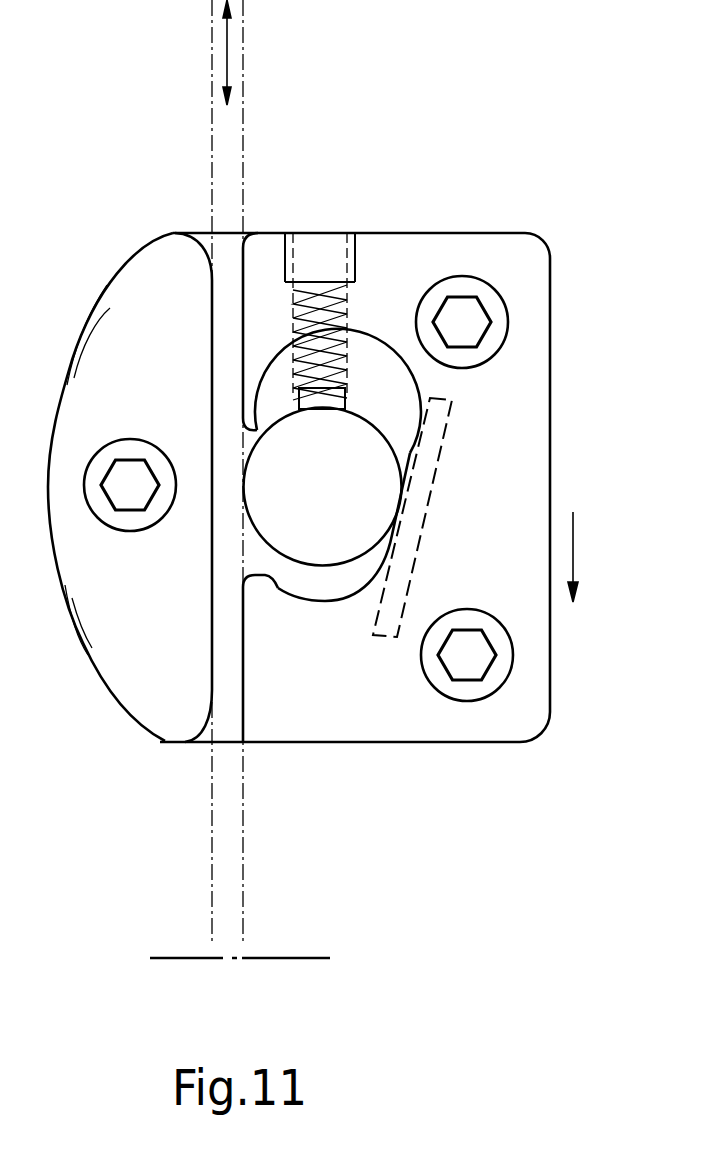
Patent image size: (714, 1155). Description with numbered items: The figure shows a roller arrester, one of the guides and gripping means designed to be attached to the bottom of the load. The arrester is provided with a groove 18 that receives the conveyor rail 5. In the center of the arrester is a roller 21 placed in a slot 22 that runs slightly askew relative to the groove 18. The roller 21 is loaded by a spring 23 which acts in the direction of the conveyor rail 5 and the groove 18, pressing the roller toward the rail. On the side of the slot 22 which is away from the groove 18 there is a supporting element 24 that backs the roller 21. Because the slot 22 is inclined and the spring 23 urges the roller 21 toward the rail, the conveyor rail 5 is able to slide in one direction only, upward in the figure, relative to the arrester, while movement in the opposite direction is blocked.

The conveyor rail 5 is at (211, 50).
The groove 18 is at (230, 357).
The roller 21 is at (258, 513).
The slot 22 is at (286, 580).
The spring 23 is at (310, 283).
The supporting element 24 is at (428, 498).